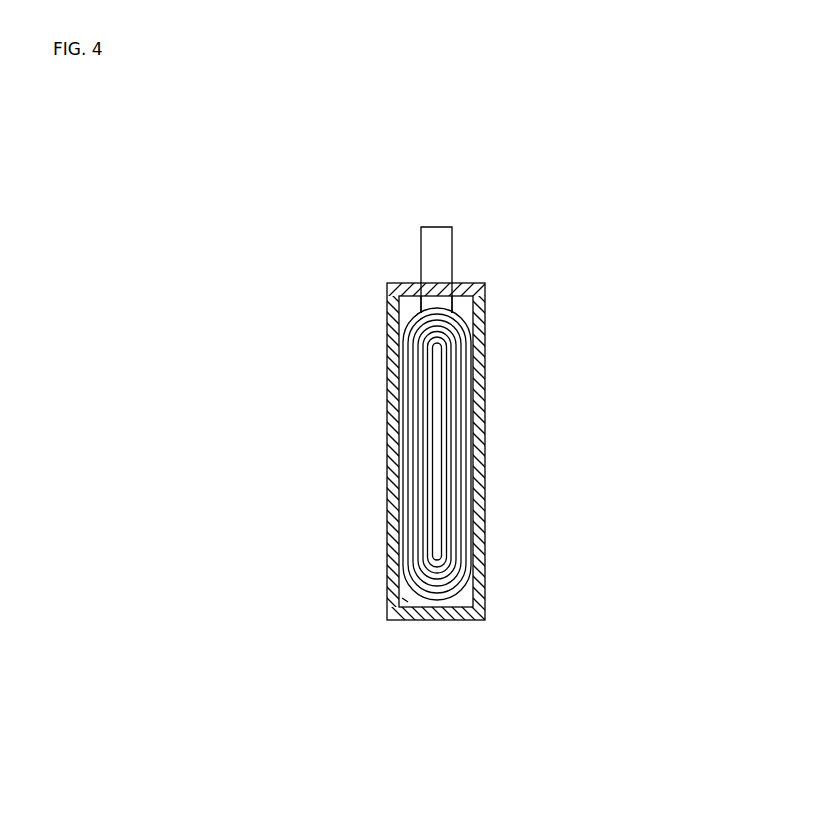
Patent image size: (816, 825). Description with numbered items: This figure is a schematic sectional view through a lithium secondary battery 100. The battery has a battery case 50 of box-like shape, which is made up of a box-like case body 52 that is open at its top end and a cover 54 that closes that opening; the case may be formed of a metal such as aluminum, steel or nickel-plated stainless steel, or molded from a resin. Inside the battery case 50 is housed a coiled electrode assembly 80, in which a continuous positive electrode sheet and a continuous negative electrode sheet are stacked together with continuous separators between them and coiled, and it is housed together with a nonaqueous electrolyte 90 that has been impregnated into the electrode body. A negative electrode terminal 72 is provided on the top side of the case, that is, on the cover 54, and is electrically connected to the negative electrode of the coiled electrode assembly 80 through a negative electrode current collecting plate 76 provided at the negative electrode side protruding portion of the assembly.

The lithium secondary battery 100 is at (588, 190).
The battery case 50 is at (392, 515).
The case body 52 is at (485, 553).
The cover 54 is at (466, 283).
The negative electrode terminal 72 is at (447, 226).
The negative electrode current collecting plate 76 is at (425, 304).
The coiled electrode assembly 80 is at (407, 600).
The nonaqueous electrolyte 90 is at (455, 406).